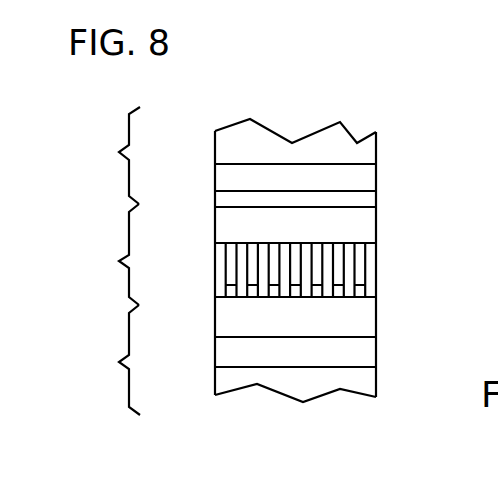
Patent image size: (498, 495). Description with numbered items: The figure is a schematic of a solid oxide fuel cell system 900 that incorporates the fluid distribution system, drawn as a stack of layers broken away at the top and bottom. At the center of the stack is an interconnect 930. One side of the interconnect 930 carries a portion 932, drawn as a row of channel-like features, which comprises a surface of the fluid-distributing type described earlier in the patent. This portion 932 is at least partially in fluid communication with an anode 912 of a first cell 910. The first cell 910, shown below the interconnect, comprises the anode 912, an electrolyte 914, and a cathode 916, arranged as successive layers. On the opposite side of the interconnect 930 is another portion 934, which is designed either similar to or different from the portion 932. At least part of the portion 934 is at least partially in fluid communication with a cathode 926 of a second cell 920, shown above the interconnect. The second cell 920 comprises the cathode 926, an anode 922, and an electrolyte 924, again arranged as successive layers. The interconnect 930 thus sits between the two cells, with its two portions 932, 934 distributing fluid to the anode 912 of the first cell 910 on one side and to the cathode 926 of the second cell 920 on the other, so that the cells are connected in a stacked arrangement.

The light emitting device / layered structure 900 is at (226, 104).
The first cell 910 is at (225, 360).
The anode 912 is at (215, 315).
The electrolyte 914 is at (215, 350).
The cathode 916 is at (215, 384).
The second cell 920 is at (265, 159).
The anode 922 is at (376, 149).
The electrolyte 924 is at (376, 178).
The cathode 926 is at (376, 202).
The interconnect 930 is at (265, 254).
The portion 932 is at (215, 268).
The portion 934 is at (376, 228).